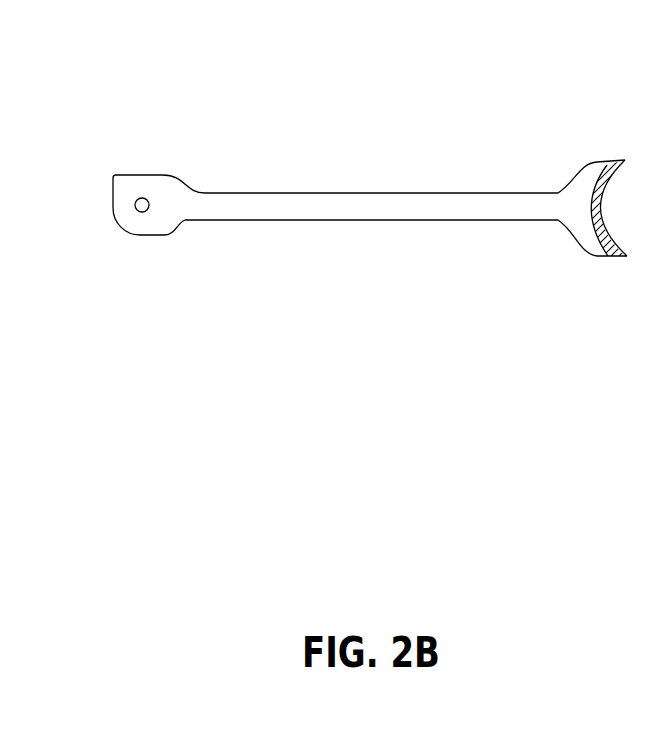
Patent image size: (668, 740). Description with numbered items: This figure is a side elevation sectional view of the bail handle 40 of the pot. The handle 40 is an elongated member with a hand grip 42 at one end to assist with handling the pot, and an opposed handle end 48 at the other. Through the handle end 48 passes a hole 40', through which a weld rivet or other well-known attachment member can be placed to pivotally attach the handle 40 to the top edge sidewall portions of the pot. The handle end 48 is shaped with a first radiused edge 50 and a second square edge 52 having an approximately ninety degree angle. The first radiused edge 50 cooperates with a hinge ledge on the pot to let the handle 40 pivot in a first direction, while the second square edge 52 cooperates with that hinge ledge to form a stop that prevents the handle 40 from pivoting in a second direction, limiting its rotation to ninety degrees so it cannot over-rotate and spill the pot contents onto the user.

The bail handle 40 is at (371, 146).
The hole 40' is at (88, 220).
The hand grip 42 is at (595, 165).
The handle end 48 is at (155, 183).
The first radiused edge 50 is at (127, 233).
The second square edge 52 is at (128, 173).